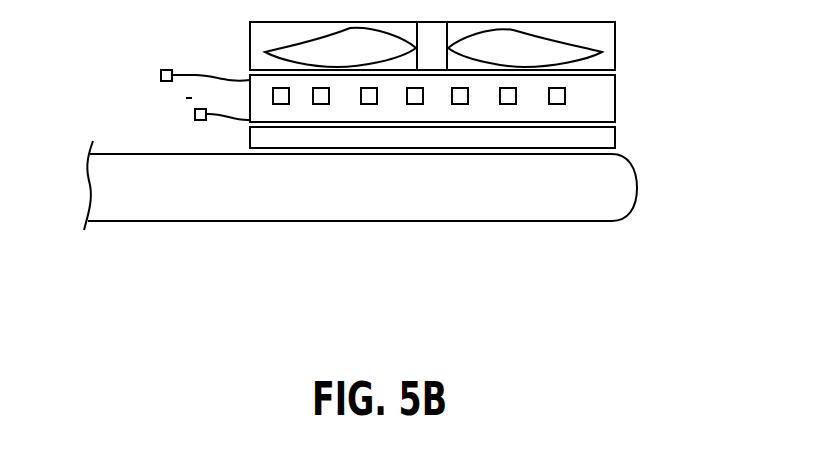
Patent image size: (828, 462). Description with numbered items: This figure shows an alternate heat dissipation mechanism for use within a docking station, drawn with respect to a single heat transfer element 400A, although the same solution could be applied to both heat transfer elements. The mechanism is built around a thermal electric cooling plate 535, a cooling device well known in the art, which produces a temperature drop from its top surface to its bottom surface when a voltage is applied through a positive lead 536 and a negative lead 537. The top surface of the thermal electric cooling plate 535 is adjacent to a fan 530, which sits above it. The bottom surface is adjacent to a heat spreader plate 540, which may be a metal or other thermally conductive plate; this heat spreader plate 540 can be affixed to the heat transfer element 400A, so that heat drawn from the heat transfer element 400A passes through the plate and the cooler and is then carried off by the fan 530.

The fan 530 is at (625, 28).
The thermal electric cooling plate 535 is at (625, 93).
The heat spreader plate 540 is at (625, 137).
The positive lead 536 is at (153, 77).
The negative lead 537 is at (191, 116).
The heat transfer element 400A is at (158, 222).